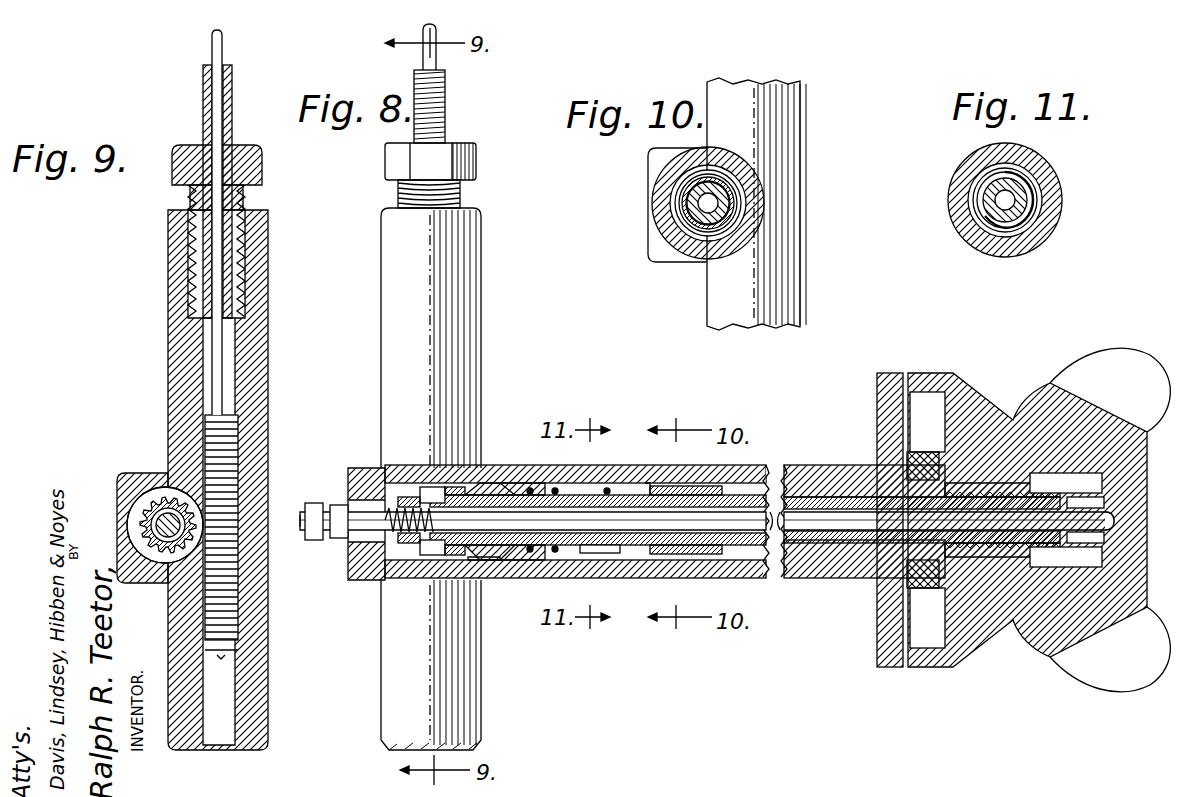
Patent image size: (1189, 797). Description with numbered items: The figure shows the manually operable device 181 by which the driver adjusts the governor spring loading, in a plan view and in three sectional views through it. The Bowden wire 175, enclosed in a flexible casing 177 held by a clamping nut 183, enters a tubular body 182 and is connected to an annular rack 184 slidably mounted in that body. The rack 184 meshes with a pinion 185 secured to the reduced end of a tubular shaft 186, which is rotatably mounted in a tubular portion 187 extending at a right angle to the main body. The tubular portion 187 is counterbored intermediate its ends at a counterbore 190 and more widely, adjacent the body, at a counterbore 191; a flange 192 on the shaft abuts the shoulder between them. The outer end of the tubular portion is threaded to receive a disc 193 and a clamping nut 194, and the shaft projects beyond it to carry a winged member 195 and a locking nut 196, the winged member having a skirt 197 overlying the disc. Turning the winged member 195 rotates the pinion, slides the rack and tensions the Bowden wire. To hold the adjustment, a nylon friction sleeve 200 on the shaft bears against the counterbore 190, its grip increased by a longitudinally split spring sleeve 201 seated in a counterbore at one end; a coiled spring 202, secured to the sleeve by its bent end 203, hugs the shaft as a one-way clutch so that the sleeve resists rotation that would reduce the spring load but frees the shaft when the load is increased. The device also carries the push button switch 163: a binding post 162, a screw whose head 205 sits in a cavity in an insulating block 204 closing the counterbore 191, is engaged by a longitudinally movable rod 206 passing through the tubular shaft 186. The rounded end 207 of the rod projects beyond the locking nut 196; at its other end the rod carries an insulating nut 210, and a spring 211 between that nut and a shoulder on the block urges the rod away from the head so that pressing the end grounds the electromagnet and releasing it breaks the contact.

In FIG. 8, the binding post 162 is at (312, 540).
In FIG. 8, the push button switch 163 is at (1112, 530).
In FIG. 9, the Bowden wire 175 is at (220, 372).
In FIG. 8, the Bowden wire 175 is at (436, 58).
In FIG. 9, the flexible casing 177 is at (232, 78).
In FIG. 8, the flexible casing 177 is at (445, 112).
In FIG. 9, the manually operable device 181 is at (200, 390).
In FIG. 8, the manually operable device 181 is at (476, 387).
In FIG. 10, the manually operable device 181 is at (743, 204).
In FIG. 9, the tubular body 182 is at (258, 341).
In FIG. 8, the tubular body 182 is at (455, 335).
In FIG. 10, the tubular body 182 is at (778, 285).
In FIG. 9, the clamping nut 183 is at (262, 170).
In FIG. 8, the clamping nut 183 is at (476, 165).
In FIG. 9, the annular rack 184 is at (236, 450).
In FIG. 9, the pinion 185 is at (160, 505).
In FIG. 8, the pinion 185 is at (452, 556).
In FIG. 9, the tubular shaft 186 is at (140, 518).
In FIG. 8, the tubular shaft 186 is at (588, 497).
In FIG. 10, the tubular shaft 186 is at (695, 232).
In FIG. 11, the tubular shaft 186 is at (1030, 196).
In FIG. 8, the tubular portion 187 is at (750, 478).
In FIG. 10, the tubular portion 187 is at (662, 207).
In FIG. 11, the tubular portion 187 is at (968, 226).
In FIG. 8, the counterbore 190 is at (538, 560).
In FIG. 9, the counterbore 191 is at (127, 527).
In FIG. 8, the counterbore 191 is at (470, 565).
In FIG. 8, the flange 192 is at (475, 482).
In FIG. 8, the disc 193 is at (880, 432).
In FIG. 8, the clamping nut 194 is at (918, 468).
In FIG. 8, the winged member 195 is at (988, 430).
In FIG. 8, the locking nut 196 is at (1102, 486).
In FIG. 8, the skirt 197 is at (928, 655).
In FIG. 8, the friction sleeve 200 is at (628, 486).
In FIG. 10, the friction sleeve 200 is at (740, 192).
In FIG. 8, the split spring sleeve 201 is at (700, 488).
In FIG. 10, the split spring sleeve 201 is at (740, 216).
In FIG. 8, the coiled spring 202 is at (595, 560).
In FIG. 11, the coiled spring 202 is at (1032, 220).
In FIG. 8, the bent end 203 is at (625, 556).
In FIG. 11, the bent end 203 is at (1000, 230).
In FIG. 8, the insulating block 204 is at (348, 486).
In FIG. 8, the head 205 is at (366, 572).
In FIG. 9, the rod 206 is at (172, 536).
In FIG. 8, the rod 206 is at (831, 530).
In FIG. 10, the rod 206 is at (690, 194).
In FIG. 11, the rod 206 is at (1000, 194).
In FIG. 8, the rounded end 207 is at (1104, 545).
In FIG. 8, the nut 210 is at (415, 495).
In FIG. 8, the spring 211 is at (385, 470).